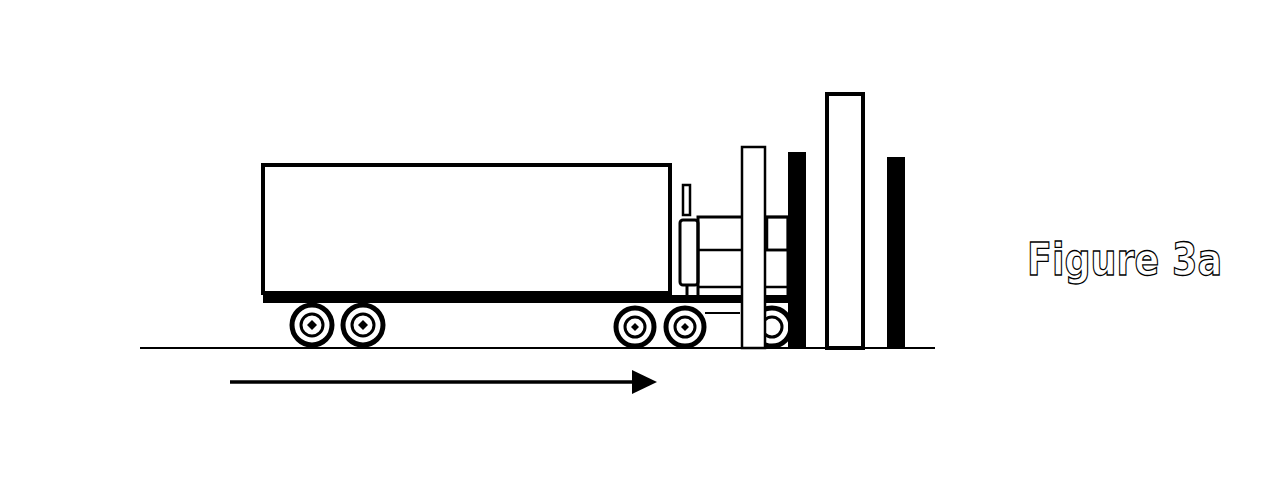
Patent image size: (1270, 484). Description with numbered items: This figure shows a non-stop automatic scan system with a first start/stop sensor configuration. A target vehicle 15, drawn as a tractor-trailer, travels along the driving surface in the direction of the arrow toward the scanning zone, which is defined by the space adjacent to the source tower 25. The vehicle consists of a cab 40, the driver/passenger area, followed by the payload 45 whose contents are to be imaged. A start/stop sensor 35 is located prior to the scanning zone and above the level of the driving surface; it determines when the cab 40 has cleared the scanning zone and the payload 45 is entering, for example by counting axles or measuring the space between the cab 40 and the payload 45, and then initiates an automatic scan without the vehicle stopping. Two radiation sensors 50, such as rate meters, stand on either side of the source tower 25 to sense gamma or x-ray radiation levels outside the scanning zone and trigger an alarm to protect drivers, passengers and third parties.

The target vehicle 15 is at (235, 143).
The payload 45 is at (376, 157).
The cab 40 is at (718, 213).
The start/stop sensor 35 is at (752, 358).
The radiation sensor 50 is at (795, 150).
The source tower 25 is at (845, 358).